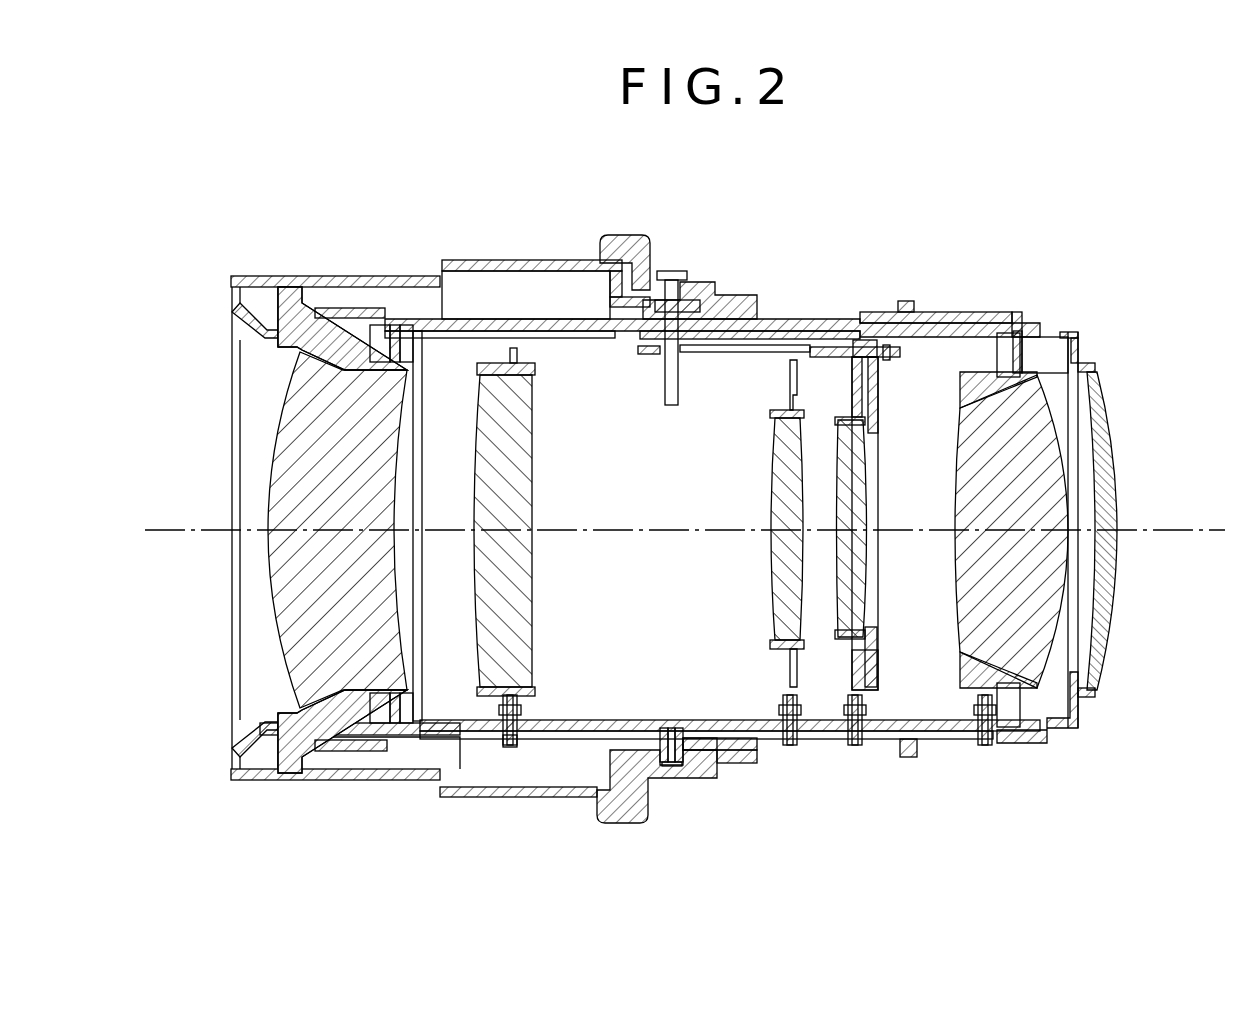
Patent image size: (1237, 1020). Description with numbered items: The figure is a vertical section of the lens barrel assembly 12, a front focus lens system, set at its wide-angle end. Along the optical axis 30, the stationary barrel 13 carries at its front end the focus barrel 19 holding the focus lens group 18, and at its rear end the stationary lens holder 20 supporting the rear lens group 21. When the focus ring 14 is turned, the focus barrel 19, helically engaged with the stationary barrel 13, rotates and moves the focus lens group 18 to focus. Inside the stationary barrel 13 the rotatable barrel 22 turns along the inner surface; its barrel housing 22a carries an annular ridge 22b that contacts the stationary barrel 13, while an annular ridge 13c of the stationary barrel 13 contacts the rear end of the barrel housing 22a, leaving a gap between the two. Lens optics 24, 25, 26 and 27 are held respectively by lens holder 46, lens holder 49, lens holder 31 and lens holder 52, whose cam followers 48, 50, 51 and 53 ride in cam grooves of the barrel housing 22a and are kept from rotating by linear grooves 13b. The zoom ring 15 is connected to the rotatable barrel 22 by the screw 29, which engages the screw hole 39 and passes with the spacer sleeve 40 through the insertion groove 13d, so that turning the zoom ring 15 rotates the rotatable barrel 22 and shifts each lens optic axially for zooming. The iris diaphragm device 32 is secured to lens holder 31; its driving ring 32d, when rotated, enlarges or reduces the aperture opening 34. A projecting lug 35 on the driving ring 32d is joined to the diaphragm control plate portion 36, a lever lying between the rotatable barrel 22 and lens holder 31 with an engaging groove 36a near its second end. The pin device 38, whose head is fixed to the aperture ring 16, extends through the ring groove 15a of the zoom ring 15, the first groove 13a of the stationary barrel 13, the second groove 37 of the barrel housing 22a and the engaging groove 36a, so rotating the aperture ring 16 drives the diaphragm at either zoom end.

The lens barrel assembly 12 is at (1073, 330).
The stationary barrel 13 is at (815, 319).
The first groove 13a is at (712, 305).
The linear grooves 13b is at (915, 750).
The annular ridge 13c is at (1022, 352).
The insertion groove 13d is at (690, 730).
The focus ring 14 is at (262, 278).
The zoom ring 15 is at (455, 260).
The ring groove 15a is at (680, 290).
The aperture ring 16 is at (618, 235).
The focus lens/lens group 18 is at (272, 470).
The focus barrel 19 is at (298, 345).
The stationary lens holder 20 is at (1078, 712).
The rear lens/lens group 21 is at (1115, 580).
The rotatable barrel 22 is at (965, 312).
The barrel housing 22a is at (578, 338).
The annular ridge 22b is at (440, 317).
The lens optics 24 is at (530, 470).
The lens optics 25 is at (775, 492).
The lens optics 26 is at (858, 492).
The lens optics 27 is at (1070, 455).
The screw 29 is at (665, 778).
The optical axis 30 is at (178, 550).
The lens holder 31 is at (853, 385).
The iris diaphragm device 32 is at (880, 675).
The driving ring 32d is at (878, 405).
The aperture opening 34 is at (872, 620).
The projecting lug 35 is at (878, 368).
The diaphragm control plate portion 36 is at (845, 337).
The engaging groove 36a is at (720, 354).
The second groove 37 is at (660, 340).
The pin device 38 is at (670, 405).
The screw hole 39 is at (668, 728).
The spacer sleeve 40 is at (718, 738).
The lens holder 46 is at (515, 692).
The cam followers 48 is at (510, 745).
The lens holder 49 is at (790, 640).
The cam followers 50 is at (790, 745).
The cam followers 51 is at (855, 745).
The lens holder 52 is at (950, 655).
The cam followers 53 is at (985, 745).